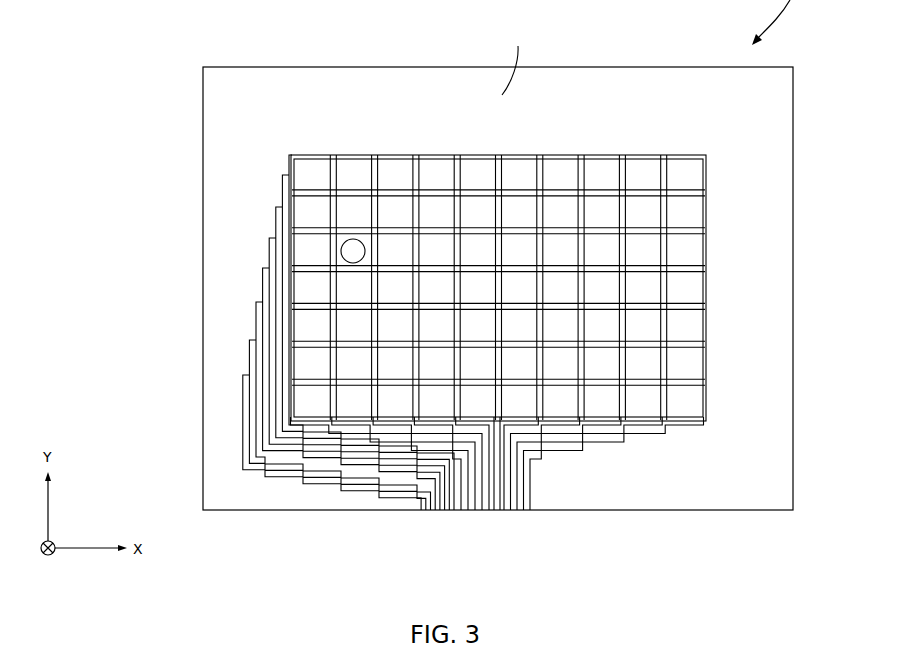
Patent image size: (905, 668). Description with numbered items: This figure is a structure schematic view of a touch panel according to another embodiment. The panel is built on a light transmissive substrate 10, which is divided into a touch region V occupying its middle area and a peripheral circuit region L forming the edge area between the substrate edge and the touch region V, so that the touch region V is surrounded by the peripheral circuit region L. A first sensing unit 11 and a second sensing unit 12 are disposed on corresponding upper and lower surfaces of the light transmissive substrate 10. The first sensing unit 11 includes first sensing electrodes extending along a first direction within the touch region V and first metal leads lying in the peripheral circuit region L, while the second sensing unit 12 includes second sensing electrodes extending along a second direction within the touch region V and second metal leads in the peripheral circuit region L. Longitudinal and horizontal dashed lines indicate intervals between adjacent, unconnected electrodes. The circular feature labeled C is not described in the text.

The light transmissive substrate 10 is at (793, 403).
The first sensing unit 11 is at (371, 190).
The second sensing unit 12 is at (708, 178).
The peripheral circuit region L is at (512, 62).
The touch region V is at (690, 292).
The circular opening C is at (353, 265).